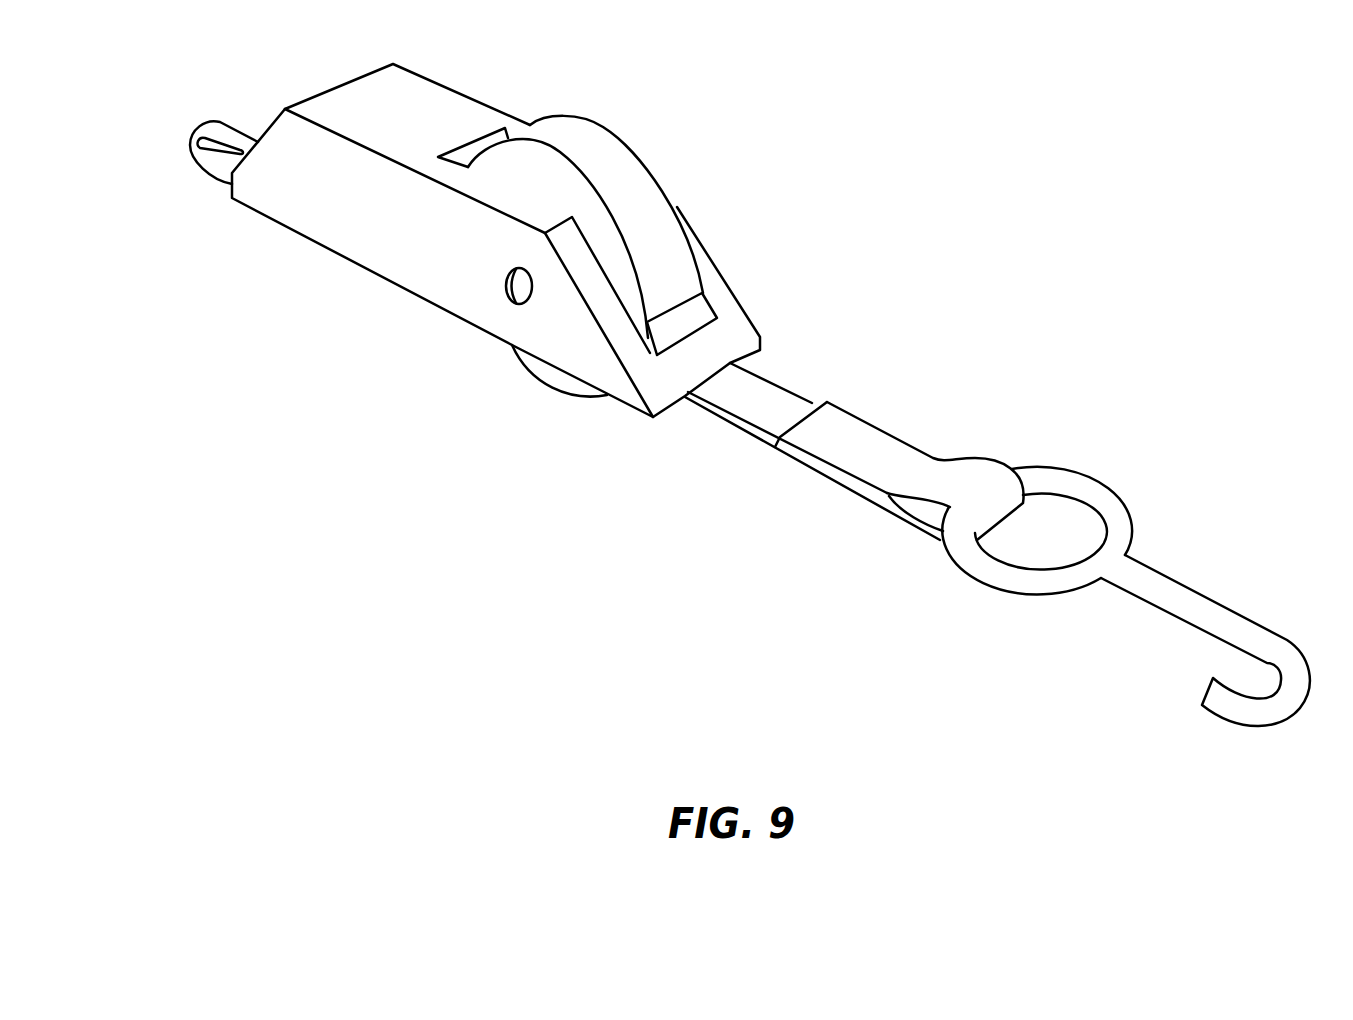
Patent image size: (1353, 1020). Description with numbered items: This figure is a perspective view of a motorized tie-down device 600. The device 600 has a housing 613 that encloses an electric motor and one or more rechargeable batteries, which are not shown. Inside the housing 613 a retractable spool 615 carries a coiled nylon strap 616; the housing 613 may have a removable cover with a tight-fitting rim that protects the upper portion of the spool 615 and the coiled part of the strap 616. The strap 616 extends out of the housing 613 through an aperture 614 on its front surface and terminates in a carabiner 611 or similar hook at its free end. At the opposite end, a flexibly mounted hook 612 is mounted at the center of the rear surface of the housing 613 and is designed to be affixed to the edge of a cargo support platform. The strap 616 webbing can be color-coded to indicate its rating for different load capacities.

The motorized tie-down device 600 is at (343, 260).
The carabiner 611 is at (1093, 478).
The hook 612 is at (200, 172).
The housing 613 is at (458, 87).
The aperture 614 is at (723, 368).
The retractable spool 615 is at (653, 163).
The nylon strap 616 is at (812, 402).